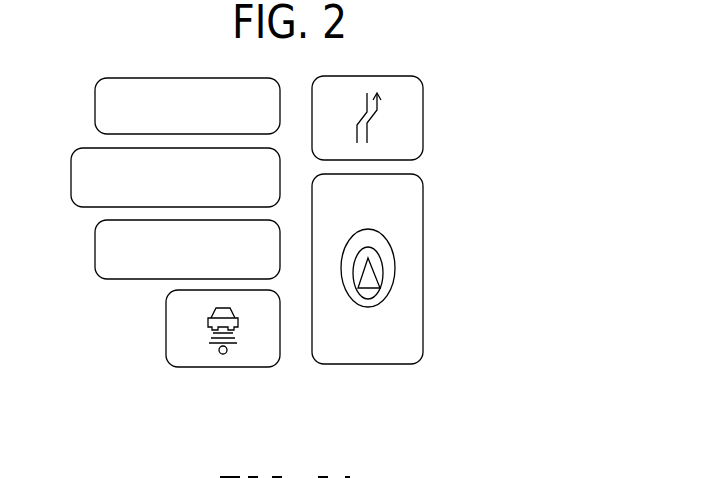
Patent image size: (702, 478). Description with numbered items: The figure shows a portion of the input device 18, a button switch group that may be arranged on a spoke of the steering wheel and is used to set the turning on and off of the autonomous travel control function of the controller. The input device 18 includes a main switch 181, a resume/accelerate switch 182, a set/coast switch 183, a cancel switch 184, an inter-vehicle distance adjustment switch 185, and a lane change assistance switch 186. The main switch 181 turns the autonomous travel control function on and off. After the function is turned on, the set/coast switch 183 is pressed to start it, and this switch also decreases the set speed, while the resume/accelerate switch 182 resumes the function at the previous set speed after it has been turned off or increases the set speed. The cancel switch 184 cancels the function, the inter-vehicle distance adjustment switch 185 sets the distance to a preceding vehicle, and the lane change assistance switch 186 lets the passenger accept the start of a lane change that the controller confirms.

The input device 18 is at (517, 132).
The main switch 181 is at (423, 219).
The resume/accelerate switch 182 is at (95, 105).
The set/coast switch 183 is at (95, 247).
The cancel switch 184 is at (71, 177).
The inter-vehicle distance adjustment switch 185 is at (166, 326).
The lane change assistance switch 186 is at (423, 107).